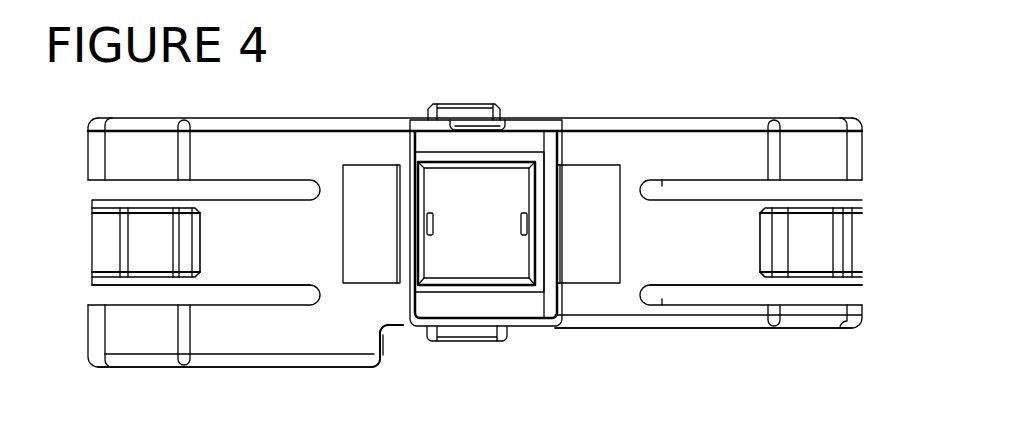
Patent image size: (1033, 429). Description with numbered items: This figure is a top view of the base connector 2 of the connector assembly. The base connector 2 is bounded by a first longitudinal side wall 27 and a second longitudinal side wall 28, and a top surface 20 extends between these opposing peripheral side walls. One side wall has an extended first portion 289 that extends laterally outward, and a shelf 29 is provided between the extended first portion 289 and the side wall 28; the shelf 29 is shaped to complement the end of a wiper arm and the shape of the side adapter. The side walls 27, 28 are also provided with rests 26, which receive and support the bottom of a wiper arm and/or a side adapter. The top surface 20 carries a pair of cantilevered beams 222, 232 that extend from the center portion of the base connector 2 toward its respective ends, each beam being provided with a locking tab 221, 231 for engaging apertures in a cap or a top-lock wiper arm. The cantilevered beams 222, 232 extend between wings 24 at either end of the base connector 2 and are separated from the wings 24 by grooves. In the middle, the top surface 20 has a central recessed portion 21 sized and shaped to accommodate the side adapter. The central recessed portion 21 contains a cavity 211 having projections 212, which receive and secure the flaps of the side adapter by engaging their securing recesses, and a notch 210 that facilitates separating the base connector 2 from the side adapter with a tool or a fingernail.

The base connector 2 is at (343, 100).
The top surface 20 is at (290, 155).
The central recessed portion 21 is at (512, 302).
The wings 24 is at (118, 152).
The rests 26 is at (438, 105).
The first longitudinal side wall 27 is at (265, 118).
The second longitudinal side wall 28 is at (670, 330).
The shelf 29 is at (380, 350).
The notch 210 is at (500, 117).
The cavity 211 is at (427, 248).
The projections 212 is at (527, 217).
The locking tab 221 is at (145, 243).
The cantilevered beam 222 is at (217, 275).
The locking tab 231 is at (815, 243).
The cantilevered beam 232 is at (720, 272).
The extended first portion 289 is at (237, 366).